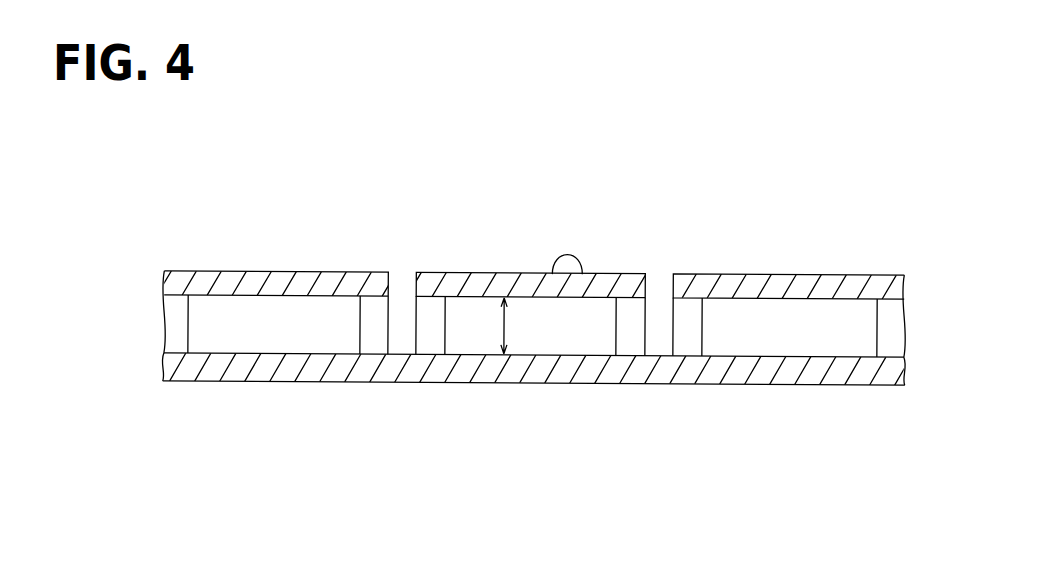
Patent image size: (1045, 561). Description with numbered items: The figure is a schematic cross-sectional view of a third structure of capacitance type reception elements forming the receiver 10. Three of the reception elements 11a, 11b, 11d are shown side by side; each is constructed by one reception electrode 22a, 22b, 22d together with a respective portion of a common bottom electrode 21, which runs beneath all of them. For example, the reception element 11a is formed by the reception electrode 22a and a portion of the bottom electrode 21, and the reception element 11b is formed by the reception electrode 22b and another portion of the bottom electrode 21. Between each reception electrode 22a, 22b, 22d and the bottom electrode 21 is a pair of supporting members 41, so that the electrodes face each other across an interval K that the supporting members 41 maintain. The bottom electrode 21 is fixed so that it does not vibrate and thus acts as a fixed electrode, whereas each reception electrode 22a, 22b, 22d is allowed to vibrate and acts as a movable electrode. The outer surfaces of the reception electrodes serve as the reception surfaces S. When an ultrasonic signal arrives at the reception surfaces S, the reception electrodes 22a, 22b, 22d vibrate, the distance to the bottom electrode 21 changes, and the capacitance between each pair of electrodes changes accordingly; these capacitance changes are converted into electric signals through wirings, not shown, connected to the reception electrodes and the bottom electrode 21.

The semiconductor device 10 is at (692, 147).
The reception element 11a is at (534, 237).
The reception element 11b is at (322, 239).
The reception element 11d is at (836, 244).
The bottom electrode 21 is at (805, 385).
The reception electrode 22a is at (480, 273).
The reception electrode 22b is at (267, 272).
The reception electrode 22d is at (780, 275).
The supporting member 41 is at (176, 343).
The reception surface S is at (582, 273).
The interval K is at (506, 332).